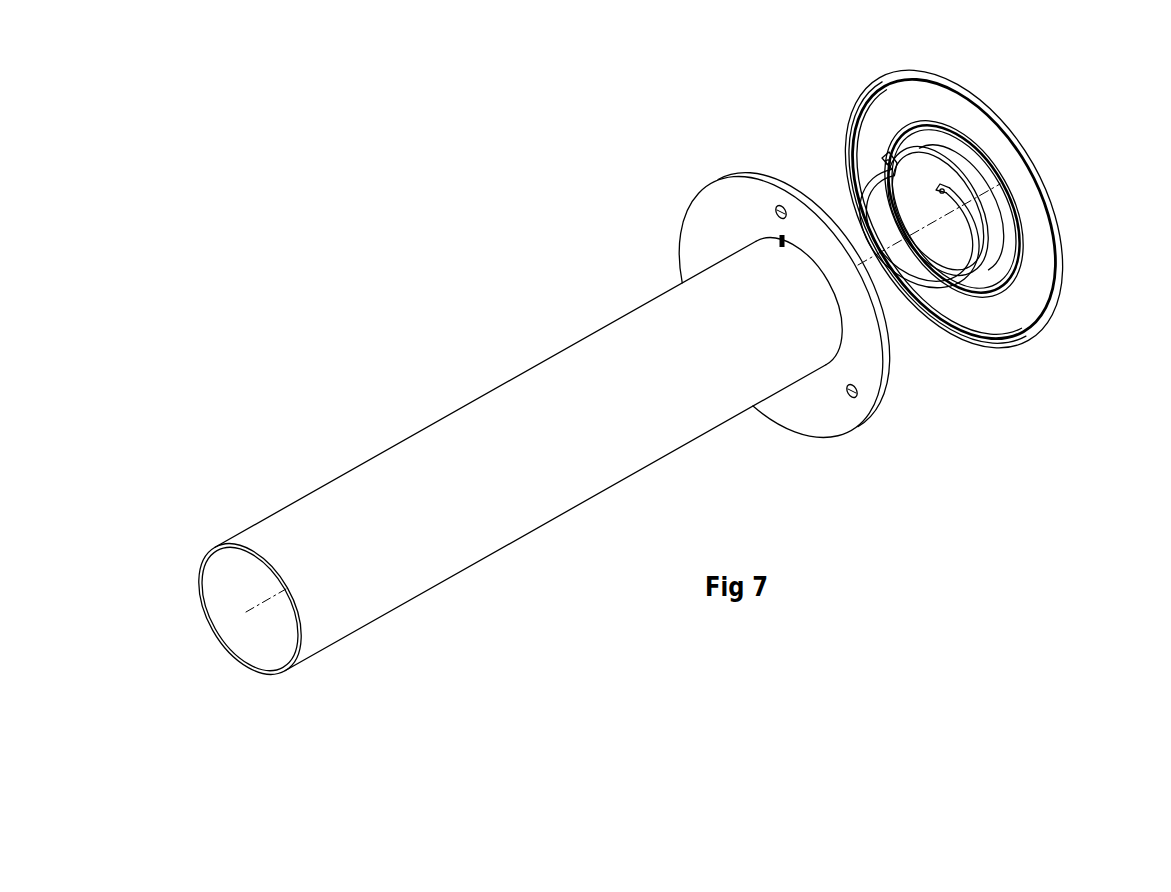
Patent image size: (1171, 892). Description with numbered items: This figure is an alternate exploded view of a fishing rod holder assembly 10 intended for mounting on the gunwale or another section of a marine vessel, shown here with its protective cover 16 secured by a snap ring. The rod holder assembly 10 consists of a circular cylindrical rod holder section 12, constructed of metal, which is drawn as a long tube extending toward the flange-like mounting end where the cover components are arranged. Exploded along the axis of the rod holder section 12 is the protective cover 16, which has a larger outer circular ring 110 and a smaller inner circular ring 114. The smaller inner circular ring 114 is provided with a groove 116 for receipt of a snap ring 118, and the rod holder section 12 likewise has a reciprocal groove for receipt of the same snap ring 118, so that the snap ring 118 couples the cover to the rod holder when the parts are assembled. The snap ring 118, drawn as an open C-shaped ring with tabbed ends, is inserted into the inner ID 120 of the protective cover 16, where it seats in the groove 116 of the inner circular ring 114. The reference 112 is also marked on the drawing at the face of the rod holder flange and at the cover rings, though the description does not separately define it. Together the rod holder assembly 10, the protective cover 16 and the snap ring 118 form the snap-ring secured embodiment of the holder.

The rod holder assembly 10 is at (452, 541).
The circular cylindrical rod holder section 12 is at (750, 171).
The protective cover 16 is at (1058, 300).
The larger outer circular ring 110 is at (1043, 183).
The mating face 112 is at (1020, 223).
The smaller inner circular ring 114 is at (975, 153).
The groove 116 is at (943, 142).
The snap ring 118 is at (958, 290).
The inner ID 120 is at (980, 205).